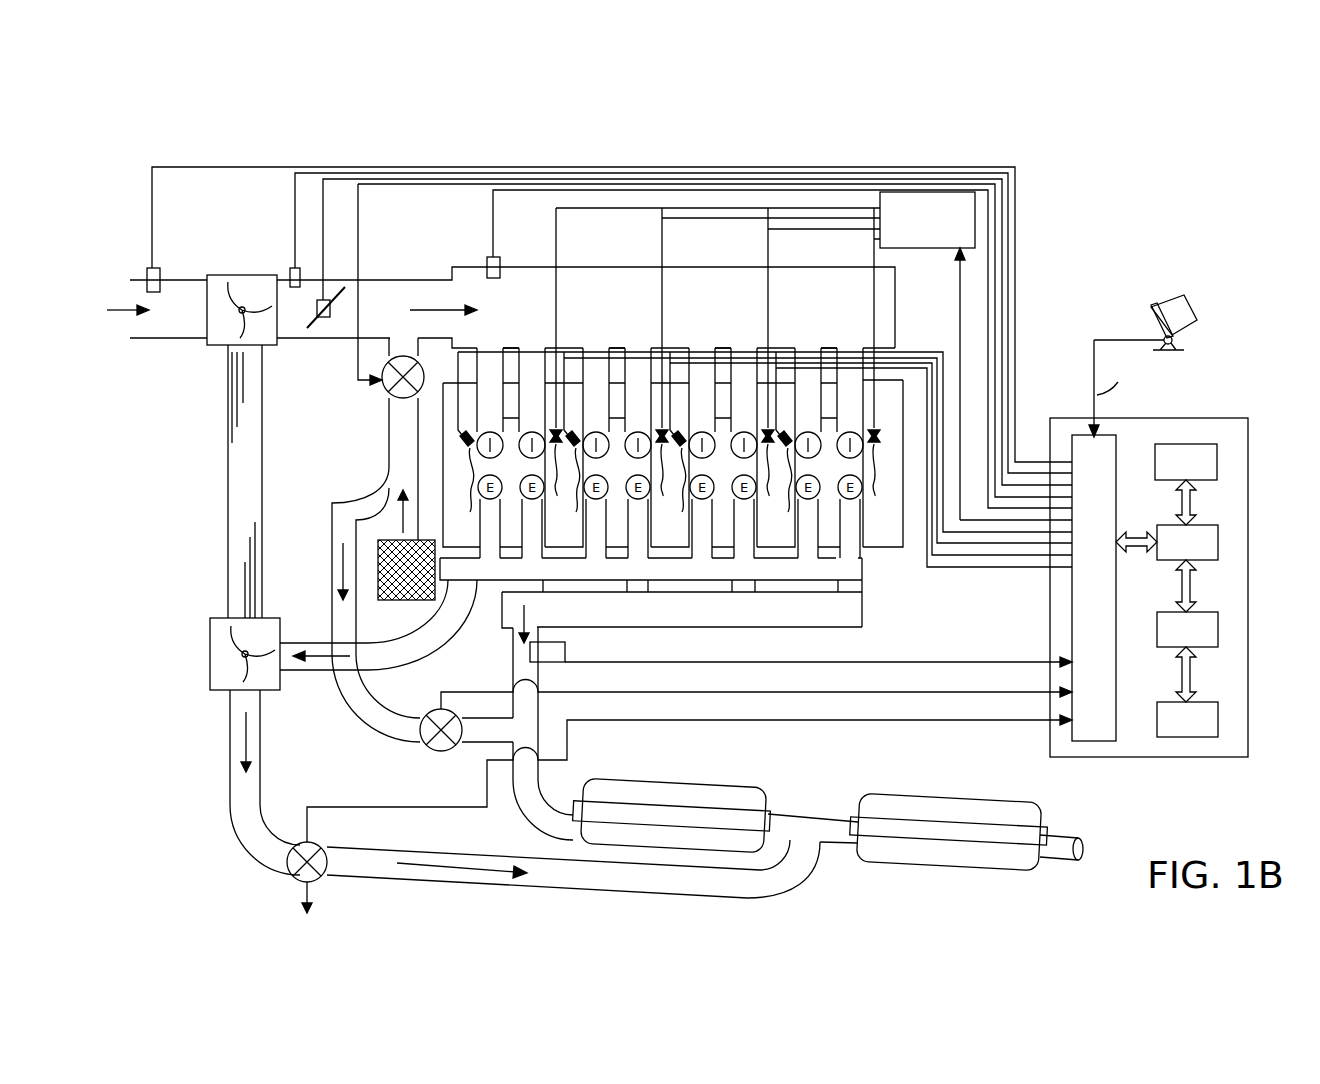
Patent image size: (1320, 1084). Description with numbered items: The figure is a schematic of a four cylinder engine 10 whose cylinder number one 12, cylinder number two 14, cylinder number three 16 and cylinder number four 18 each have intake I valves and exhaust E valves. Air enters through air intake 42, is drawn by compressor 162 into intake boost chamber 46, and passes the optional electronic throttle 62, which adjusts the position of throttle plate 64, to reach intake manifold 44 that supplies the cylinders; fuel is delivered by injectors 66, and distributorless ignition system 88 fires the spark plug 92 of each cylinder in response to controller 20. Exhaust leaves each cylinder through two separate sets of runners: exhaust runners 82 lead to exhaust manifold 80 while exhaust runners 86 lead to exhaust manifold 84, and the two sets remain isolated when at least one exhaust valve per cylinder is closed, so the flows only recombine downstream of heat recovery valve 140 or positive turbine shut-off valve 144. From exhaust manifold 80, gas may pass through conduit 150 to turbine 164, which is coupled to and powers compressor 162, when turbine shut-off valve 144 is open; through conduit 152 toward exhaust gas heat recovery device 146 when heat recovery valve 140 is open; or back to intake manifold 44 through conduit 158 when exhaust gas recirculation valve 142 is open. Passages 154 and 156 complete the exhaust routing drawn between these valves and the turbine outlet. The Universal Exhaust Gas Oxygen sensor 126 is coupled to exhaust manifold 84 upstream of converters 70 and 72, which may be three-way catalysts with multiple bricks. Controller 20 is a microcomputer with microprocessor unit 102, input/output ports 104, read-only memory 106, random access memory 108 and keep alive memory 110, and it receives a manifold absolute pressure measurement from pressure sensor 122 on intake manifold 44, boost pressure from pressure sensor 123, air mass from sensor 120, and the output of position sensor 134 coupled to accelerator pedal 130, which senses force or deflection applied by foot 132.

The engine 10 is at (898, 558).
The cylinder number one 12 is at (505, 479).
The cylinder number two 14 is at (611, 479).
The cylinder number three 16 is at (717, 479).
The cylinder number four 18 is at (823, 479).
The controller 20 is at (1168, 575).
The air intake 42 is at (183, 319).
The intake manifold 44 is at (677, 314).
The intake boost chamber 46 is at (285, 319).
The electronic throttle 62 is at (330, 290).
The throttle plate 64 is at (323, 317).
The injectors 66 is at (764, 459).
The converter 70 is at (758, 790).
The converter 72 is at (1040, 805).
The exhaust manifold 80 is at (615, 578).
The exhaust runners 82 is at (820, 518).
The exhaust manifold 84 is at (688, 618).
The exhaust runners 86 is at (861, 530).
The distributorless ignition system 88 is at (905, 250).
The spark plug 92 is at (716, 363).
The microprocessor unit 102 is at (1218, 540).
The input/output ports 104 is at (1116, 441).
The read-only memory 106 is at (1217, 462).
The random access memory 108 is at (1218, 628).
The keep alive memory 110 is at (1218, 716).
The sensor 120 is at (160, 268).
The pressure sensor 122 is at (487, 253).
The pressure sensor 123 is at (292, 268).
The Universal Exhaust Gas Oxygen sensor 126 is at (556, 662).
The accelerator pedal 130 is at (1153, 317).
The foot 132 is at (1192, 307).
The position sensor 134 is at (1180, 342).
The heat recovery valve 140 is at (427, 747).
The exhaust gas recirculation valve 142 is at (390, 390).
The positive turbine shut-off valve 144 is at (290, 878).
The exhaust gas heat recovery device 146 is at (423, 603).
The conduit 150 is at (437, 658).
The conduit 152 is at (538, 813).
The EGR passage 154 is at (347, 723).
The turbine outlet passage 156 is at (230, 812).
The conduit 158 is at (387, 445).
The compressor 162 is at (213, 347).
The turbine 164 is at (217, 617).